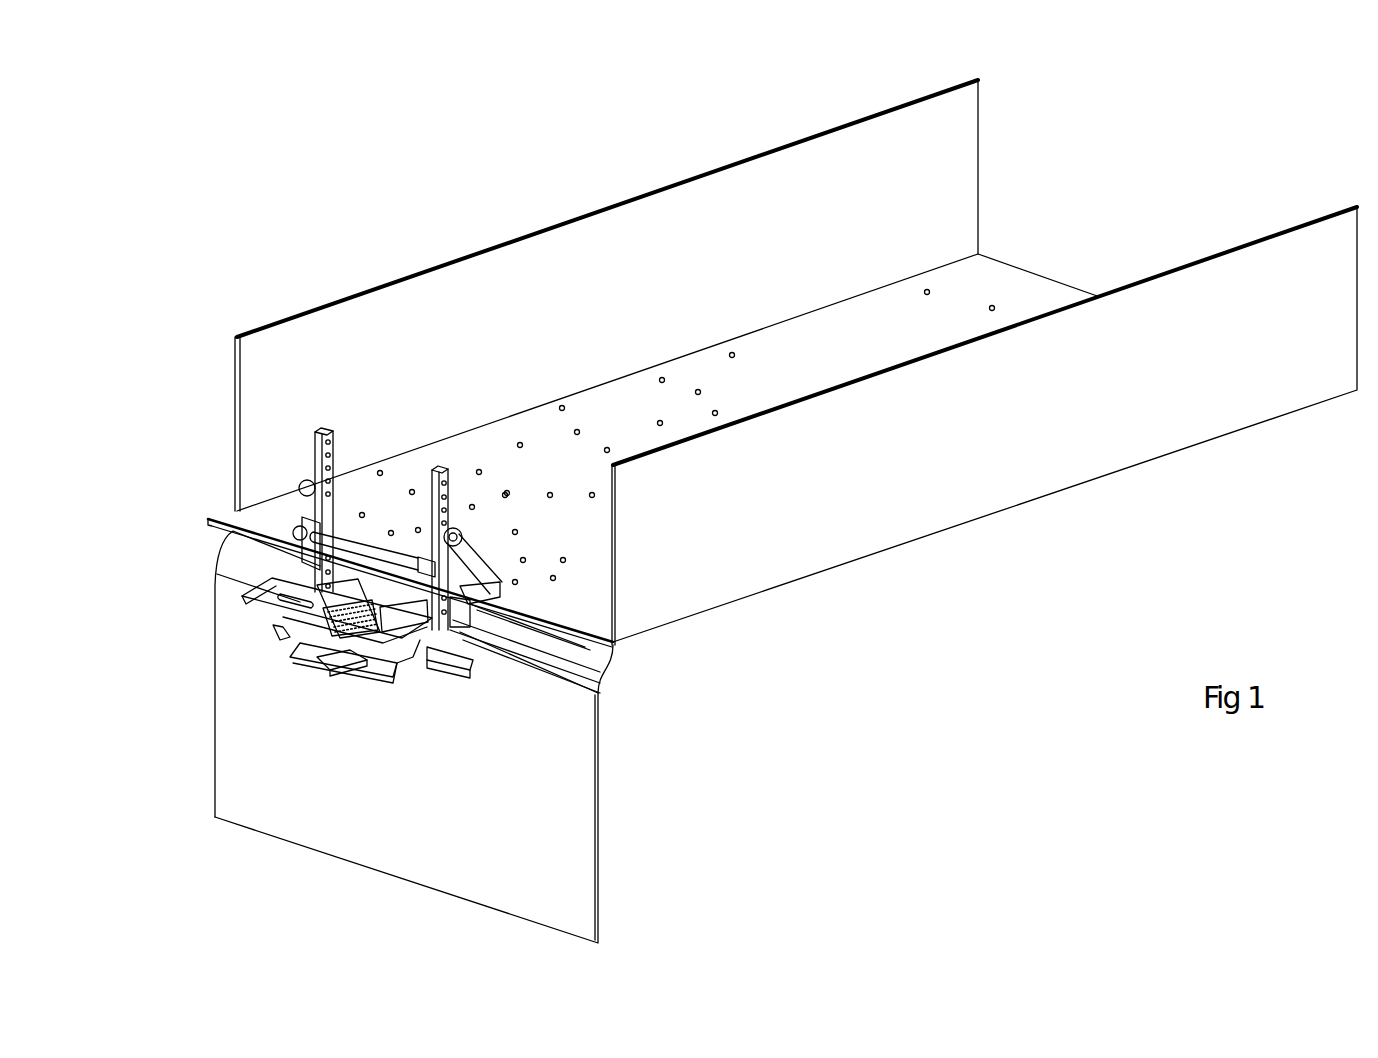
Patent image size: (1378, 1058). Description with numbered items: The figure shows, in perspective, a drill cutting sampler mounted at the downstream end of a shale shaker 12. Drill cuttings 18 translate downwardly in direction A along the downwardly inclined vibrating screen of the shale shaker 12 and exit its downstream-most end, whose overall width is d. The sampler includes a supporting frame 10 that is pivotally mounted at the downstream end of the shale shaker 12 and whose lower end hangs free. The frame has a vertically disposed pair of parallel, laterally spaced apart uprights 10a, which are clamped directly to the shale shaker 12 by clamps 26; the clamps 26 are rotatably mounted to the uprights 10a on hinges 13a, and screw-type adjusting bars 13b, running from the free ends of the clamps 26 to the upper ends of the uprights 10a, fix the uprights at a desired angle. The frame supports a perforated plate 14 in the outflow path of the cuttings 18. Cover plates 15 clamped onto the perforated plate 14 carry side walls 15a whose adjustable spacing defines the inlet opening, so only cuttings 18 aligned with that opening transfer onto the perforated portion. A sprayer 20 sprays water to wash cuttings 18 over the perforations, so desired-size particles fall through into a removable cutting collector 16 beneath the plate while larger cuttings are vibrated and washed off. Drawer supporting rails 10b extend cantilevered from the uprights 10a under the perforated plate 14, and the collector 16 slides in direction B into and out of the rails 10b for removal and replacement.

The supporting frame 10 is at (523, 677).
The uprights 10a is at (322, 430).
The drawer supporting rails 10b is at (413, 678).
The shale shaker 12 is at (1002, 277).
The hinges 13a is at (242, 516).
The screw-type adjusting bars 13b is at (473, 552).
The perforated plate 14 is at (320, 612).
The cover plates 15 is at (258, 589).
The side walls 15a is at (395, 680).
The cutting collector 16 is at (300, 682).
The drill cuttings 18 is at (732, 352).
The sprayer 20 is at (347, 522).
The clamps 26 is at (487, 592).
The direction of cuttings travel A is at (762, 368).
The direction of collector sliding B is at (343, 688).
The overall width of the downstream outflow end d is at (233, 345).